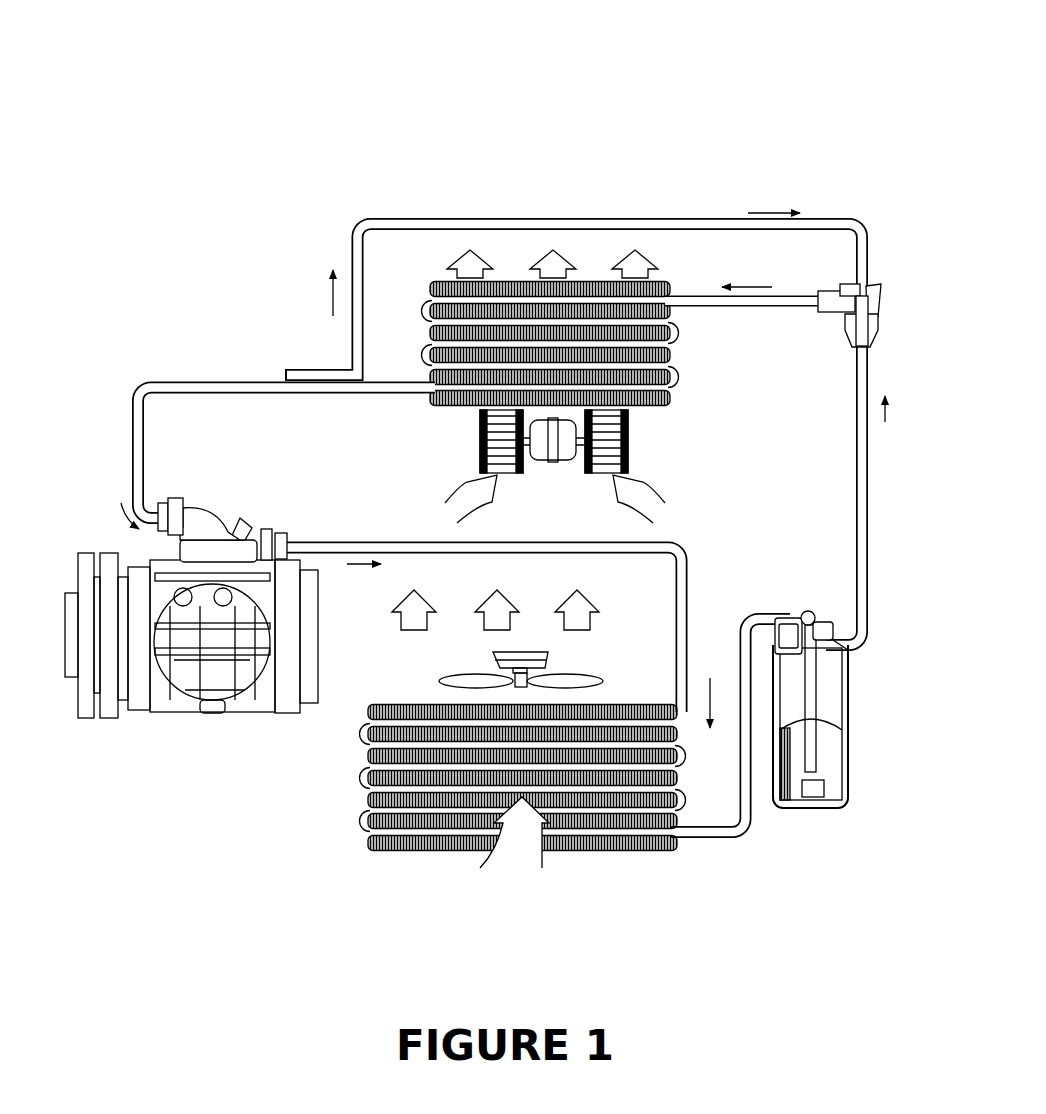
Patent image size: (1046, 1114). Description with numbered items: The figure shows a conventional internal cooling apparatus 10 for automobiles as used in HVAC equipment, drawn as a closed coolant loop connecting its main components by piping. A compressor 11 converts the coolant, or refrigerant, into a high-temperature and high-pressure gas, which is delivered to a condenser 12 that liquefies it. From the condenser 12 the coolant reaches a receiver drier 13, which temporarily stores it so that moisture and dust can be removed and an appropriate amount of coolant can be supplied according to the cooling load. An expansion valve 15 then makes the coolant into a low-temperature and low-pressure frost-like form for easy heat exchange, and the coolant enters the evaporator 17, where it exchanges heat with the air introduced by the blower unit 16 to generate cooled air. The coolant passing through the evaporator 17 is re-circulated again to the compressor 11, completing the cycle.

The internal cooling apparatus 10 is at (420, 46).
The compressor 11 is at (191, 657).
The condenser 12 is at (523, 776).
The receiver drier 13 is at (810, 754).
The expansion valve 15 is at (889, 315).
The blower unit 16 is at (577, 466).
The evaporator 17 is at (550, 277).